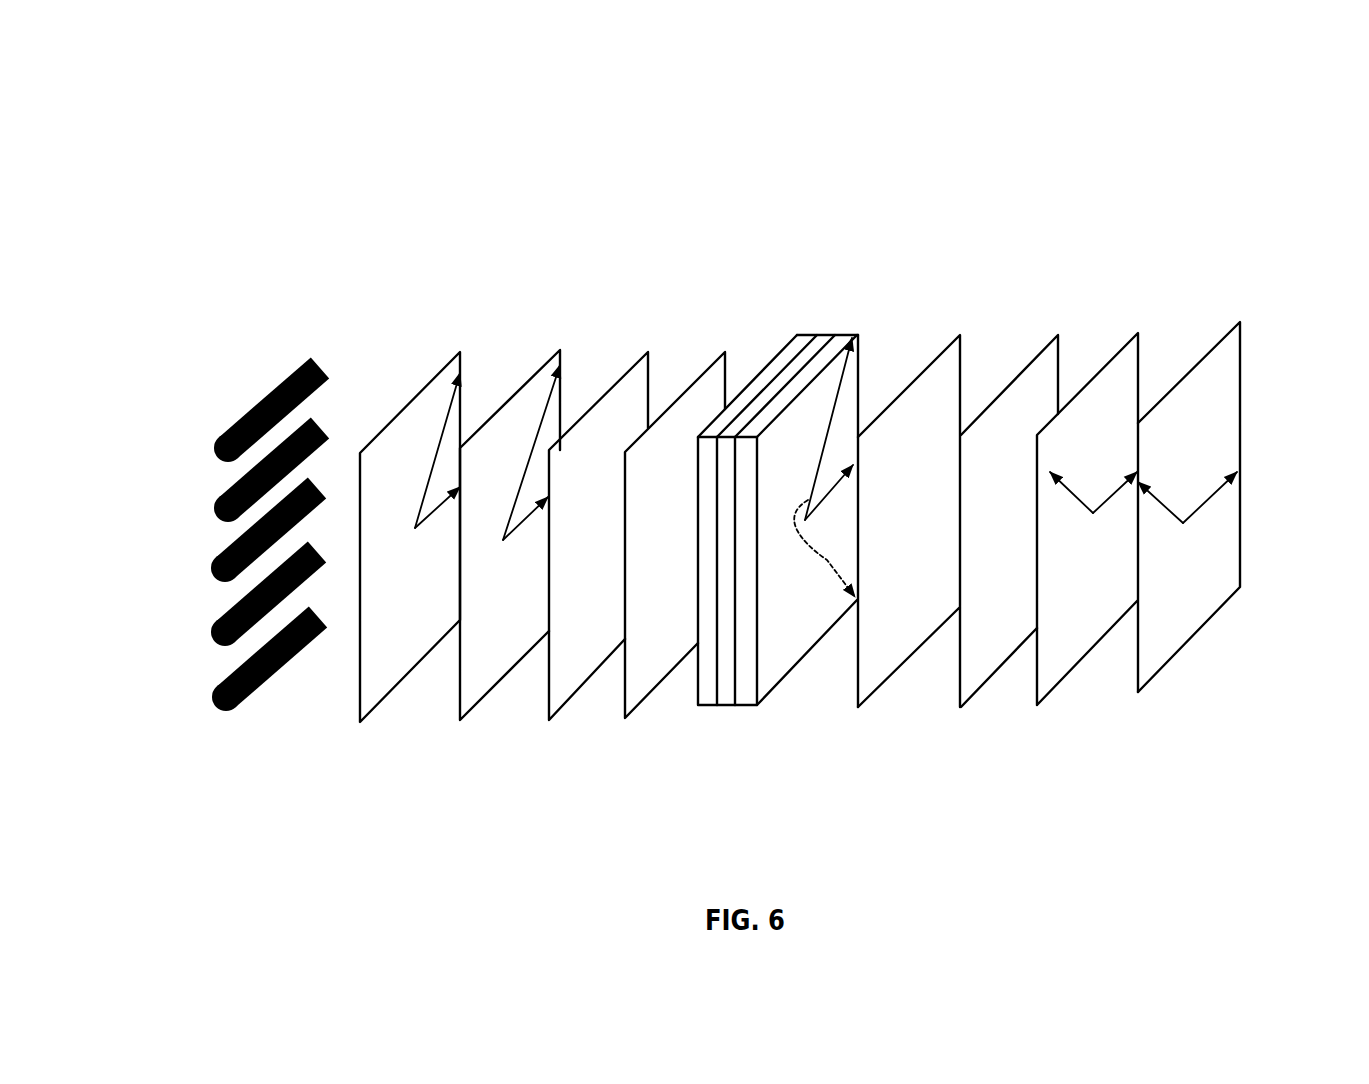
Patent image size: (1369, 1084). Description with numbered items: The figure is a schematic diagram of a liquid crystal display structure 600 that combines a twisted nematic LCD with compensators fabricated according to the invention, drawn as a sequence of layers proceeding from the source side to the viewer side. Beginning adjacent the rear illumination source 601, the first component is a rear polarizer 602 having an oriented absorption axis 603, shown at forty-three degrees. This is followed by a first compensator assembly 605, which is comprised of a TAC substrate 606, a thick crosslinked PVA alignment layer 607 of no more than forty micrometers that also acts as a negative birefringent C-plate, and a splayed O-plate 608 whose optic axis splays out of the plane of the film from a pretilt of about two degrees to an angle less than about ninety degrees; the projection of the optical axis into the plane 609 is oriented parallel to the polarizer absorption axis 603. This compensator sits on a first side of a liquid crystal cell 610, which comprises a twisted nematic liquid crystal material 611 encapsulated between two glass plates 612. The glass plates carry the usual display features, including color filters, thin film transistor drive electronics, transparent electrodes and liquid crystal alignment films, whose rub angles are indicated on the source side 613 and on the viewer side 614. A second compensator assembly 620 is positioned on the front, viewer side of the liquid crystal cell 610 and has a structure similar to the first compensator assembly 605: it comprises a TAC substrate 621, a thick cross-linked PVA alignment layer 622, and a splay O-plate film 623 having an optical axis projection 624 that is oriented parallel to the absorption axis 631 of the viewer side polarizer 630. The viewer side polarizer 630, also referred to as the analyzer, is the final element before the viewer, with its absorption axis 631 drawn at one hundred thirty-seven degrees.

The liquid crystal display structure 600 is at (711, 303).
The rear illumination source 601 is at (280, 668).
The rear polarizer 602 is at (397, 413).
The polarizer absorption axis 603 is at (444, 403).
The first compensator assembly 605 is at (494, 511).
The TAC substrate 606 is at (660, 690).
The crosslinked PVA alignment layer 607 is at (618, 368).
The splayed O-plate 608 is at (448, 703).
The projection of the optical axis into the plane 609 is at (526, 457).
The liquid crystal cell 610 is at (813, 331).
The twisted nematic liquid crystal material 611 is at (828, 333).
The glass plates 612 is at (813, 527).
The source side rub angle 613 is at (824, 562).
The viewer side rub angle 614 is at (827, 417).
The second compensator assembly 620 is at (1009, 508).
The TAC substrate 621 is at (962, 387).
The cross-linked PVA alignment layer 622 is at (1053, 340).
The splay O-plate film 623 is at (1062, 655).
The optical axis projection 624 is at (1078, 513).
The viewer side polarizer 630 is at (1215, 393).
The absorption axis 631 is at (1167, 517).